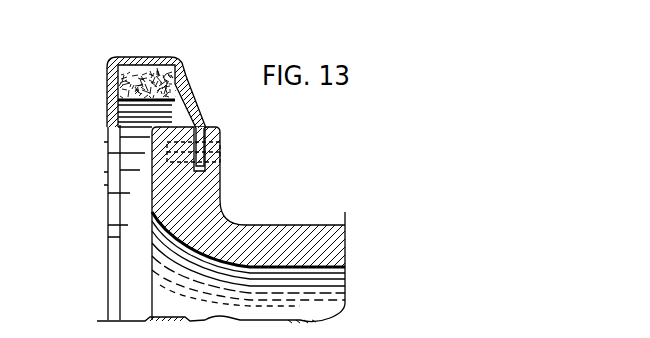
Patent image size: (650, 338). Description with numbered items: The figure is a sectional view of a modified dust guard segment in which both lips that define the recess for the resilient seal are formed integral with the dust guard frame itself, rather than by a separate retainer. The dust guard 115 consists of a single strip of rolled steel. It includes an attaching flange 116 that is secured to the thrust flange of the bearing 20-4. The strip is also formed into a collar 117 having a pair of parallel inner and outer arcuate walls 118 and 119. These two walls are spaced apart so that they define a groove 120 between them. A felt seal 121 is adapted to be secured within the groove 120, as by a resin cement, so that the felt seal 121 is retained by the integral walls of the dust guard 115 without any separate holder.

The bearing 20-4 is at (274, 226).
The dust guard 115 is at (171, 56).
The attaching flange 116 is at (208, 131).
The collar 117 is at (139, 62).
The inner arcuate wall 118 is at (186, 82).
The outer arcuate wall 119 is at (107, 85).
The groove 120 is at (129, 68).
The felt seal 121 is at (156, 77).